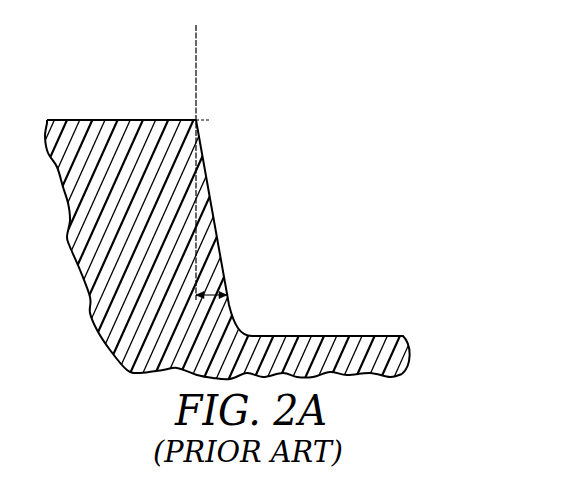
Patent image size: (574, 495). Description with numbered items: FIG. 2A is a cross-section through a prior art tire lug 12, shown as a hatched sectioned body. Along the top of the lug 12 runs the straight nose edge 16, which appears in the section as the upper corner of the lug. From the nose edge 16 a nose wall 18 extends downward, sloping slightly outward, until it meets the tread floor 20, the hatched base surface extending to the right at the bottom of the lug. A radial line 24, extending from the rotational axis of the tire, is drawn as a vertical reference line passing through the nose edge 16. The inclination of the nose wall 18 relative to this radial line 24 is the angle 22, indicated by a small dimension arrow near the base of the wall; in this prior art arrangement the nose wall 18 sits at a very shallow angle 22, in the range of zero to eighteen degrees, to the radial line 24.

The lug 12 is at (122, 120).
The straight nose edge 16 is at (197, 121).
The nose wall 18 is at (212, 207).
The tread floor 20 is at (337, 336).
The angle 22 is at (213, 284).
The radial line 24 is at (196, 54).